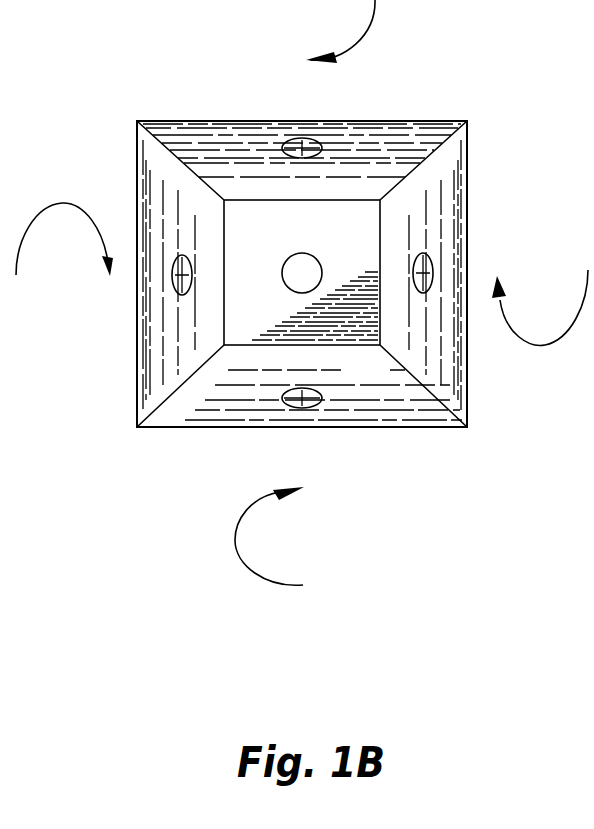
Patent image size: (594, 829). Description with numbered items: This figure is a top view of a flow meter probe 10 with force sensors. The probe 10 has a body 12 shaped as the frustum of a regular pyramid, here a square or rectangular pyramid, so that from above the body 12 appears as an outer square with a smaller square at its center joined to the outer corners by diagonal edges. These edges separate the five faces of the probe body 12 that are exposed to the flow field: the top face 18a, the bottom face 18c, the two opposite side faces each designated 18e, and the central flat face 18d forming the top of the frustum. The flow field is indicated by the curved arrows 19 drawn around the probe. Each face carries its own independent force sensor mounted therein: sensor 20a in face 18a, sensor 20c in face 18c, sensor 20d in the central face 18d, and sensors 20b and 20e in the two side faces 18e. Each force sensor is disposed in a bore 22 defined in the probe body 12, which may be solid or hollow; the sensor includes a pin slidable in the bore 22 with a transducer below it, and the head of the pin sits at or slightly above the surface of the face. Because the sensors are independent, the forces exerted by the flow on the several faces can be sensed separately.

The cube-shaped gaming device 10 is at (196, 84).
The housing body 12 is at (137, 165).
The top face panel 18a is at (260, 163).
The bottom face panel 18c is at (323, 389).
The center face panel 18d is at (318, 240).
The side face panel 18e is at (193, 242).
The rotation direction arrow 19 is at (380, 12).
The top opening 20a is at (301, 142).
The right side opening 20b is at (425, 270).
The bottom opening 20c is at (304, 402).
The center opening 20d is at (301, 272).
The left side opening 20e is at (183, 276).
The side wall 22 is at (470, 366).